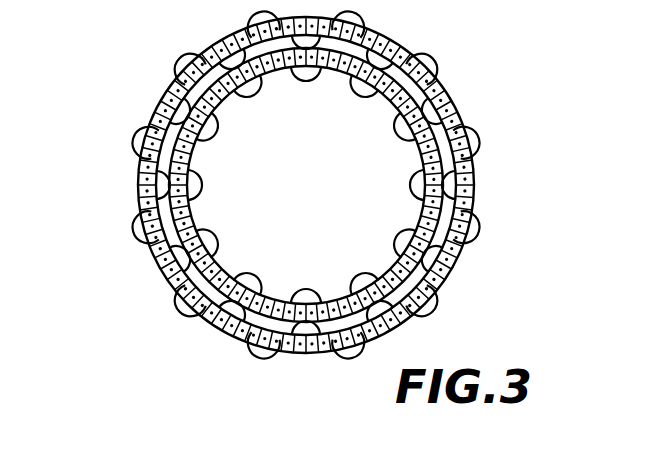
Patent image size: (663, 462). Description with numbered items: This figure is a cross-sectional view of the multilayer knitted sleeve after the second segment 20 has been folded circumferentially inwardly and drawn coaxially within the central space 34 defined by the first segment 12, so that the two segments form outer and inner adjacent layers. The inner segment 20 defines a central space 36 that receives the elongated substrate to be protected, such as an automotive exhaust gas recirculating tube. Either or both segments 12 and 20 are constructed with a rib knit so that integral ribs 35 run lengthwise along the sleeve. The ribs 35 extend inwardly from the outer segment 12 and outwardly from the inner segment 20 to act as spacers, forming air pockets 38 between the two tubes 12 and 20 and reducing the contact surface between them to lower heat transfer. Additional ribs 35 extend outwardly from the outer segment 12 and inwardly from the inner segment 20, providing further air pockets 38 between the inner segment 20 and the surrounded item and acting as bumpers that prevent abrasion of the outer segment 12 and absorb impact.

The first segment 12 is at (150, 257).
The second segment 20 is at (230, 265).
The central space 34 is at (427, 97).
The ribs 35 is at (418, 182).
The central space 36 is at (327, 191).
The air pockets 38 is at (138, 205).